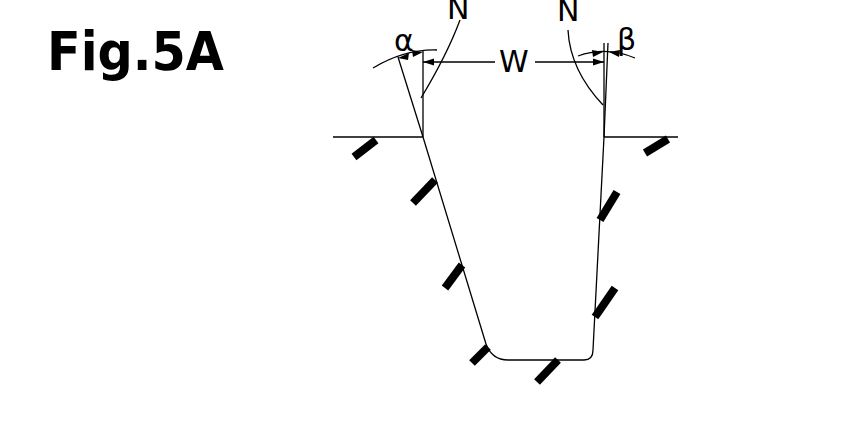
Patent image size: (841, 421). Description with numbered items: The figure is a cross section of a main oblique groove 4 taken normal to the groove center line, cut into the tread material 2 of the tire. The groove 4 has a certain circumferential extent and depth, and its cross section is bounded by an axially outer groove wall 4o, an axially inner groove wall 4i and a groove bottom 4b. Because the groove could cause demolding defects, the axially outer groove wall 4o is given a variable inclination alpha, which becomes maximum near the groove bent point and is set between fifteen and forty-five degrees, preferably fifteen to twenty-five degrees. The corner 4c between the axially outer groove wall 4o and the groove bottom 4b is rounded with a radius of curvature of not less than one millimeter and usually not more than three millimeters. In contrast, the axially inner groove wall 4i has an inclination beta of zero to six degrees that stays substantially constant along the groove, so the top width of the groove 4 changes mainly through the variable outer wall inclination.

The substrate 2 is at (354, 135).
The main oblique groove 4 is at (577, 201).
The axially outer groove wall 4o is at (452, 231).
The axially inner groove wall 4i is at (598, 253).
The groove bottom 4b is at (542, 360).
The corner 4c is at (497, 352).